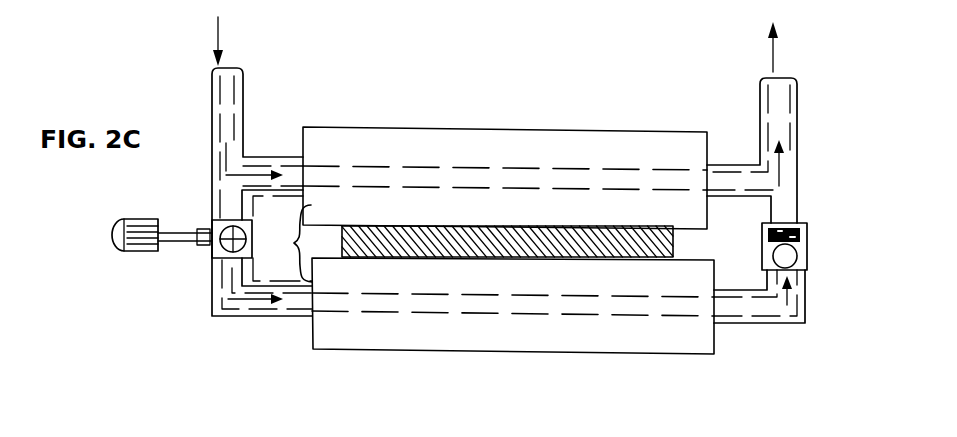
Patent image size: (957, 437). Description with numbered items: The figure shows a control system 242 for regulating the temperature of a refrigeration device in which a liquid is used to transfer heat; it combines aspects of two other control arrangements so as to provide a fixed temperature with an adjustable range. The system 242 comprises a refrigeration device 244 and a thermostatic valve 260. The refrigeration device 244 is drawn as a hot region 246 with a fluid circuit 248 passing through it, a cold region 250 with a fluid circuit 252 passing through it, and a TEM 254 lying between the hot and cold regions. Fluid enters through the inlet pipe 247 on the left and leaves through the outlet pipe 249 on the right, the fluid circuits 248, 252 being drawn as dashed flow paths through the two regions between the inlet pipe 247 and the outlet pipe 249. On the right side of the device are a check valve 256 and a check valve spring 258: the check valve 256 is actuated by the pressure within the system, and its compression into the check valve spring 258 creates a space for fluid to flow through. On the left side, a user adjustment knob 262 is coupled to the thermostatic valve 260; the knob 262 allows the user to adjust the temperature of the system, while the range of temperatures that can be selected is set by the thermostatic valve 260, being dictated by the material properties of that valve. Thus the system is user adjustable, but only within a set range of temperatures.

The control system 242 is at (440, 89).
The refrigeration device 244 is at (295, 243).
The hot region 246 is at (461, 143).
The inlet pipe 247 is at (231, 64).
The fluid circuit 248 is at (570, 178).
The outlet pipe 249 is at (782, 72).
The cold region 250 is at (450, 345).
The fluid circuit 252 is at (590, 309).
The TEM 254 is at (558, 223).
The check valve 256 is at (788, 258).
The check valve spring 258 is at (797, 224).
The thermostatic valve 260 is at (215, 258).
The user adjustment knob 262 is at (125, 252).